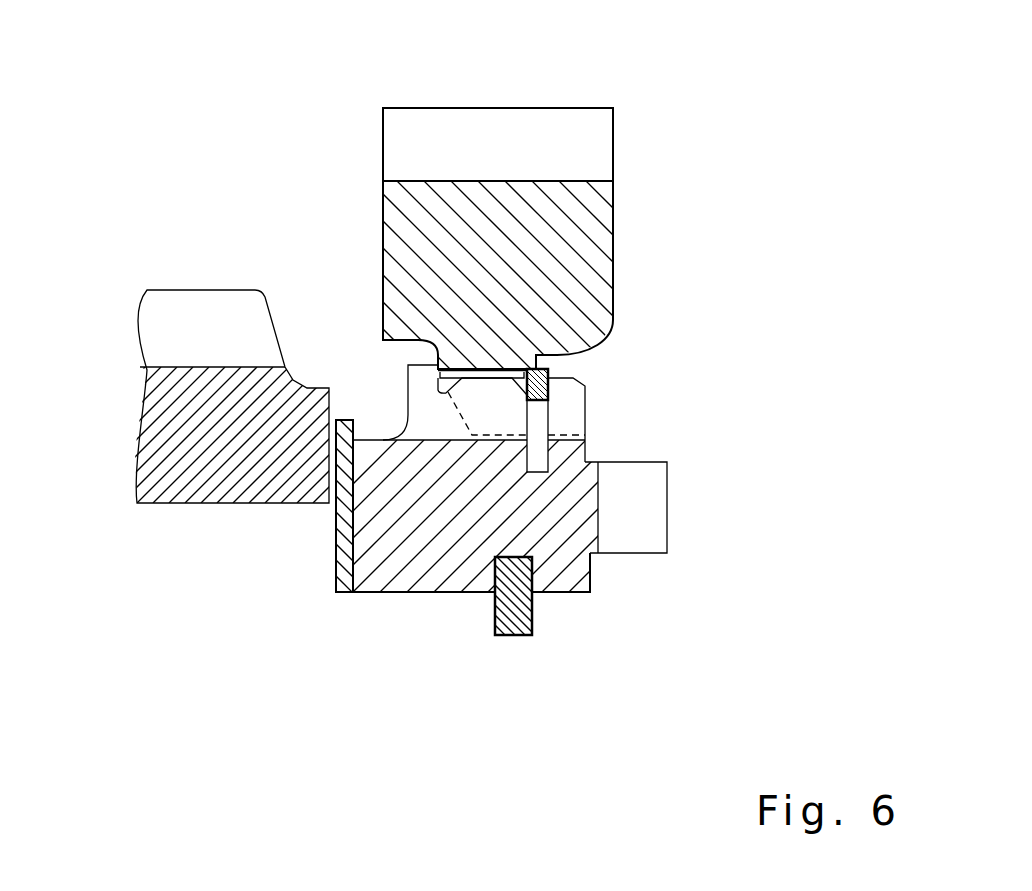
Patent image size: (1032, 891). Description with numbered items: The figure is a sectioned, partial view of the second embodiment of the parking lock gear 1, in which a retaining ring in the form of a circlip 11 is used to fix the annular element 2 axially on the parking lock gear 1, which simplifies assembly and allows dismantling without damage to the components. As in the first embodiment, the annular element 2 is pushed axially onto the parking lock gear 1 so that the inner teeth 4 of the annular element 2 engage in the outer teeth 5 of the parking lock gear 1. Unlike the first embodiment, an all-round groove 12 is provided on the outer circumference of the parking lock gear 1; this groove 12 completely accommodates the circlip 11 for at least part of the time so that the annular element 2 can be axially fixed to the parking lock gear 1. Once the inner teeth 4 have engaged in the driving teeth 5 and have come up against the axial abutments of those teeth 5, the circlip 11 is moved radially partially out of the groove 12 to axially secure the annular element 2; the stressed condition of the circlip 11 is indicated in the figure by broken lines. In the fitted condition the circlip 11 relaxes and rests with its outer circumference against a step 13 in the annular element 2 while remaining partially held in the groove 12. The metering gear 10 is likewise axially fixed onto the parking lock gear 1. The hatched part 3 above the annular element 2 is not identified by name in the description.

The parking lock gear 1 is at (440, 543).
The annular element 2 is at (560, 245).
The piston 3 is at (590, 143).
The inner teeth 4 is at (463, 365).
The outer teeth 5 is at (430, 417).
The metering gear 10 is at (650, 508).
The circlip 11 is at (548, 390).
The groove 12 is at (537, 429).
The step 13 is at (548, 368).